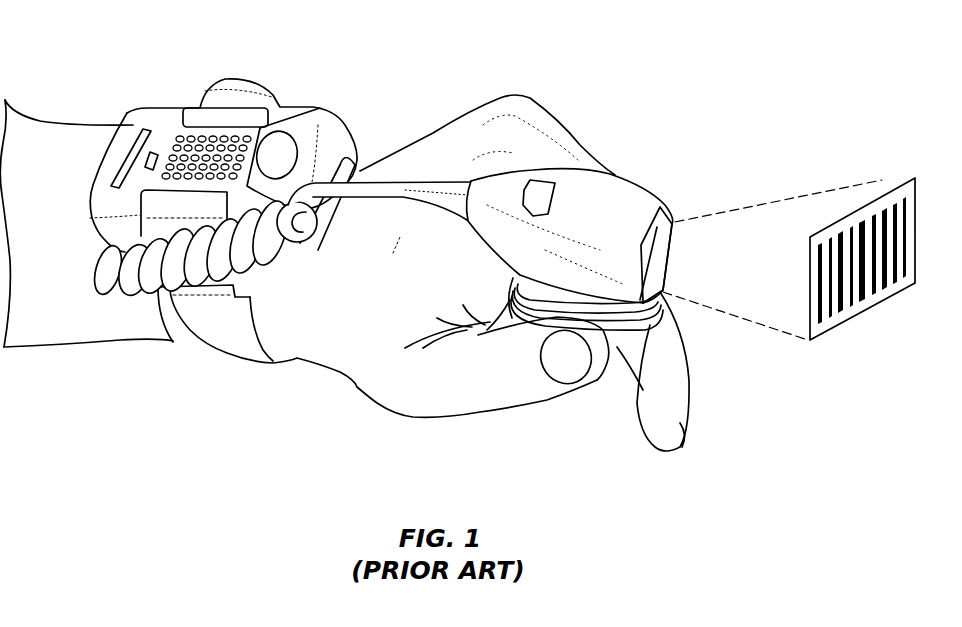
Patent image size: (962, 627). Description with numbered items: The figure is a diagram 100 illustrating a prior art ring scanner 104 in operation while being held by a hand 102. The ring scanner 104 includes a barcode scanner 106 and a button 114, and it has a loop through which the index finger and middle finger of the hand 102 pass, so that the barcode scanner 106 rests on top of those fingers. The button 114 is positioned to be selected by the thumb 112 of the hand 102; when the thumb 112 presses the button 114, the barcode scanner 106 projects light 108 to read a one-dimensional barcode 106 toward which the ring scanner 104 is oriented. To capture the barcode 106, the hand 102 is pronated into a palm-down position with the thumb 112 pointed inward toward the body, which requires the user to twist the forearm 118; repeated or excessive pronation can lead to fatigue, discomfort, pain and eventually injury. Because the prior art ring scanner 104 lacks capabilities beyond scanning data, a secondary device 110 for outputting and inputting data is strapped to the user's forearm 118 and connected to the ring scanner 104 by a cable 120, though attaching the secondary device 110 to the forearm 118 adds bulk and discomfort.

The diagram 100 is at (680, 52).
The hand 102 is at (518, 98).
The ring scanner 104 is at (635, 190).
The barcode scanner 106 is at (873, 307).
The light 108 is at (762, 207).
The secondary device 110 is at (286, 108).
The thumb 112 is at (533, 388).
The button 114 is at (613, 347).
The forearm 118 is at (42, 118).
The cable 120 is at (403, 181).